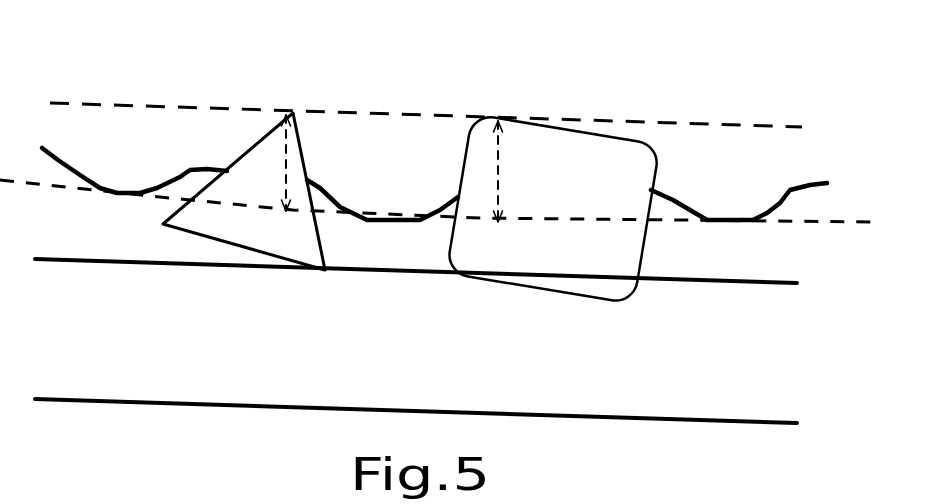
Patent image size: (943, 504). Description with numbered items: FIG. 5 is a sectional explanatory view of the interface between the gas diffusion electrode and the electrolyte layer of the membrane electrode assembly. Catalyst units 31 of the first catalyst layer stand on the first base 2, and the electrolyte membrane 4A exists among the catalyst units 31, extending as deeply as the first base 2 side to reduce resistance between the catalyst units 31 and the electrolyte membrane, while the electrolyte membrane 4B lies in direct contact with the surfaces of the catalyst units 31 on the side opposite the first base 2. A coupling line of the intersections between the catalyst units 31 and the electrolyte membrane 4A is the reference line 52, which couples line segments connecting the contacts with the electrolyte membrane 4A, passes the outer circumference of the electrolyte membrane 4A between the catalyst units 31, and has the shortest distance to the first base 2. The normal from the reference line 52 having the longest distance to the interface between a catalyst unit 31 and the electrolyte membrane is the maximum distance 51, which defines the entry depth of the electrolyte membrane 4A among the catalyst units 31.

The first base 2 is at (416, 341).
The electrolyte membrane 4A is at (434, 181).
The electrolyte membrane 4B is at (426, 75).
The catalyst unit 31 is at (163, 224).
The maximum distance 51 is at (493, 143).
The reference line 52 is at (477, 223).